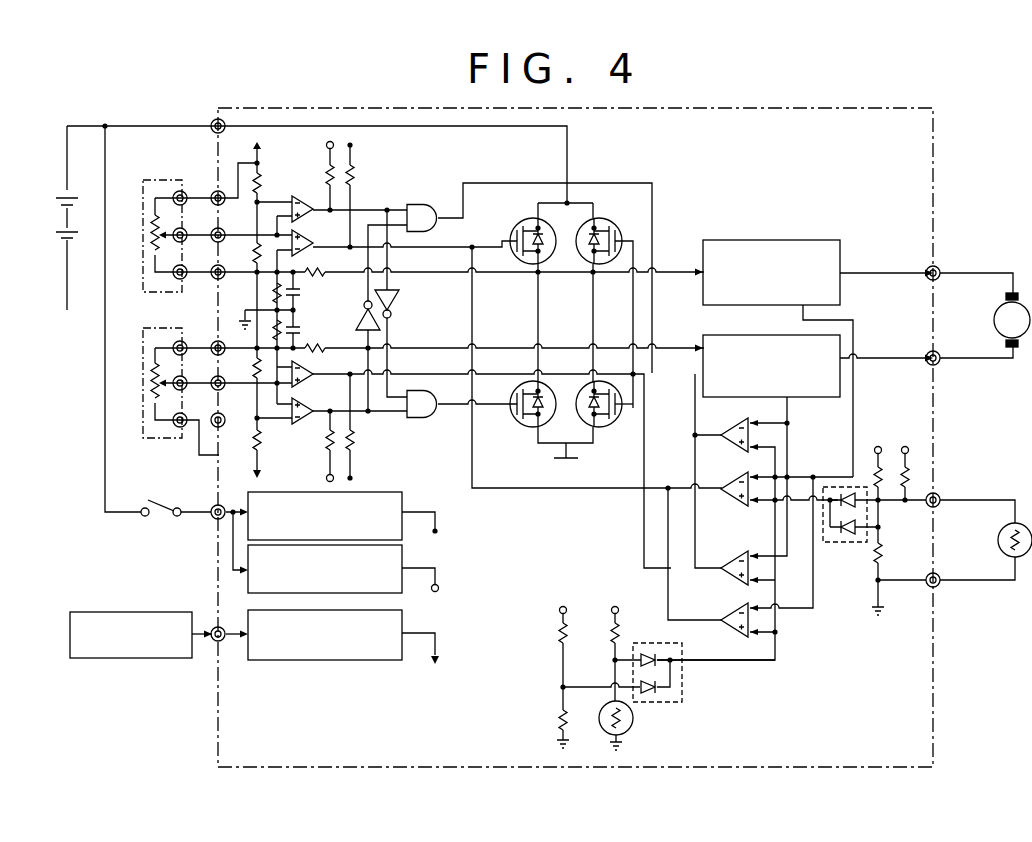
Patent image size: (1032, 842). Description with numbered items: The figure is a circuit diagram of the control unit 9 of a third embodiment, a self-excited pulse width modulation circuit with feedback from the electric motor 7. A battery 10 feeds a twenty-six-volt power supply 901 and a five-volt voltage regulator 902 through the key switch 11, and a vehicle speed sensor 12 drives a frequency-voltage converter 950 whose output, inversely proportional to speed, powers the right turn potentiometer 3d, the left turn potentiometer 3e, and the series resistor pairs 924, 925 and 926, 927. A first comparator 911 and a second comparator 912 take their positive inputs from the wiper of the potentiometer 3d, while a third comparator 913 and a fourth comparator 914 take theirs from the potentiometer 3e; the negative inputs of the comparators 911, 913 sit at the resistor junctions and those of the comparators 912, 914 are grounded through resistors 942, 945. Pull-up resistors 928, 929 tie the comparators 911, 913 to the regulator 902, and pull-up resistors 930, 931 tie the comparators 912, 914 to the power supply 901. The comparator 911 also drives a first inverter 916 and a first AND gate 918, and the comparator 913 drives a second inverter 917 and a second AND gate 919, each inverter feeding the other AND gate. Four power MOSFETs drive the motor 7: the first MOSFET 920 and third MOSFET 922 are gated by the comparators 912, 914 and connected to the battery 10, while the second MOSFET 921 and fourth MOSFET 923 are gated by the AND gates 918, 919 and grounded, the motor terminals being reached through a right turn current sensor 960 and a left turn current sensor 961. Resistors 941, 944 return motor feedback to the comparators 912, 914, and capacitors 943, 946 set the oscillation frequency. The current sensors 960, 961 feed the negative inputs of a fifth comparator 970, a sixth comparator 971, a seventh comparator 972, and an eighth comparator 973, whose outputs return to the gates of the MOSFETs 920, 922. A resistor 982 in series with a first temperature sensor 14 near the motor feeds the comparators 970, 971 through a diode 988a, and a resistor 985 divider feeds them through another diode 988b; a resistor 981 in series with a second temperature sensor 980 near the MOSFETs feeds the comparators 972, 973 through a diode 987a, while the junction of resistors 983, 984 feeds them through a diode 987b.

The control unit 9 is at (950, 724).
The battery 10 is at (57, 224).
The right turn potentiometer 3d is at (148, 280).
The left turn potentiometer 3e is at (158, 440).
The key switch 11 is at (157, 514).
The vehicle speed sensor 12 is at (141, 612).
The electric motor 7 is at (992, 323).
The first temperature sensor 14 is at (1000, 549).
The 26-volt power supply 901 is at (412, 492).
The 5-volt voltage regulator 902 is at (403, 553).
The frequency-voltage converter 950 is at (403, 631).
The first comparator 911 is at (310, 200).
The second comparator 912 is at (298, 232).
The third comparator 913 is at (259, 442).
The fourth comparator 914 is at (305, 392).
The first inverter 916 is at (397, 300).
The second inverter 917 is at (357, 326).
The first AND gate 918 is at (418, 205).
The second AND gate 919 is at (438, 420).
The first MOSFET 920 is at (512, 232).
The second MOSFET 921 is at (598, 428).
The third MOSFET 922 is at (620, 220).
The fourth MOSFET 923 is at (516, 430).
The resistor 924 is at (260, 170).
The resistor 925 is at (256, 255).
The resistor 926 is at (327, 450).
The resistor 927 is at (255, 368).
The pull-up resistor 928 is at (330, 180).
The pull-up resistor 929 is at (325, 478).
The pull-up resistor 930 is at (352, 176).
The pull-up resistor 931 is at (353, 440).
The resistor 941 is at (313, 271).
The resistor 942 is at (274, 292).
The capacitor 943 is at (300, 292).
The resistor 944 is at (315, 350).
The resistor 945 is at (275, 330).
The capacitor 946 is at (300, 328).
The right turn current sensor 960 is at (802, 240).
The left turn current sensor 961 is at (811, 398).
The fifth comparator 970 is at (727, 498).
The sixth comparator 971 is at (728, 430).
The seventh comparator 972 is at (732, 625).
The eighth comparator 973 is at (733, 576).
The second temperature sensor 980 is at (634, 726).
The resistor 981 is at (612, 638).
The resistor 982 is at (910, 478).
The resistor 983 is at (560, 637).
The resistor 984 is at (558, 716).
The resistor 985 is at (876, 472).
The diode 987a is at (650, 650).
The diode 987b is at (662, 692).
The diode 988a is at (845, 494).
The diode 988b is at (848, 533).